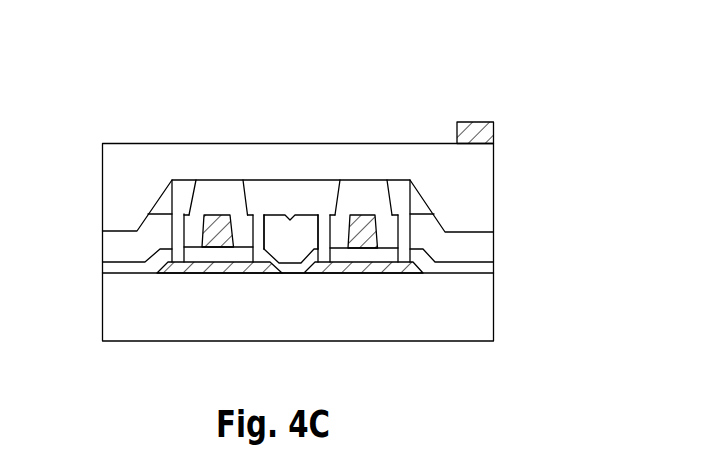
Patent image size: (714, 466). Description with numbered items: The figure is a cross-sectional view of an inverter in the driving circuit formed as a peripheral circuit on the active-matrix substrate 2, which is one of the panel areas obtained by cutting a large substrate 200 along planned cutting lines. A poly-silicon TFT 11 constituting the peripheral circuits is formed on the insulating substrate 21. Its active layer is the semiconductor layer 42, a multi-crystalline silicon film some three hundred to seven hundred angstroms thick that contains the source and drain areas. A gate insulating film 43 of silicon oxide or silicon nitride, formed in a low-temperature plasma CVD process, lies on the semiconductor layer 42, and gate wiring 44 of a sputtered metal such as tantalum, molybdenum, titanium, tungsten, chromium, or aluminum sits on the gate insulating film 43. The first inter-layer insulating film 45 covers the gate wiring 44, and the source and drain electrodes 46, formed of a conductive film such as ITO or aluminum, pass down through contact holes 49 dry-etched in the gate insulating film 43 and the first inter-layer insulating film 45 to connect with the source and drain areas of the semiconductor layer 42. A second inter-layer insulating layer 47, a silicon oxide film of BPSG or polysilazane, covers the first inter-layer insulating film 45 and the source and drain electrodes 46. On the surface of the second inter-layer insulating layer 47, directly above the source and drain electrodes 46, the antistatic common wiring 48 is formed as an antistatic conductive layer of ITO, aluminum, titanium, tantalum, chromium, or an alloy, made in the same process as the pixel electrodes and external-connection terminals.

The active-matrix substrate 2 is at (212, 66).
The large substrate 200 is at (298, 243).
The poly-silicon TFT 11 is at (425, 334).
The insulating substrate 21 is at (494, 323).
The semiconductor layer 42 is at (178, 272).
The gate insulating film 43 is at (483, 270).
The gate wiring 44 is at (215, 214).
The first inter-layer insulating film 45 is at (111, 250).
The source and drain electrodes 46 is at (187, 190).
The second inter-layer insulating layer 47 is at (111, 181).
The antistatic common wiring 48 is at (477, 131).
The contact holes 49 is at (187, 229).